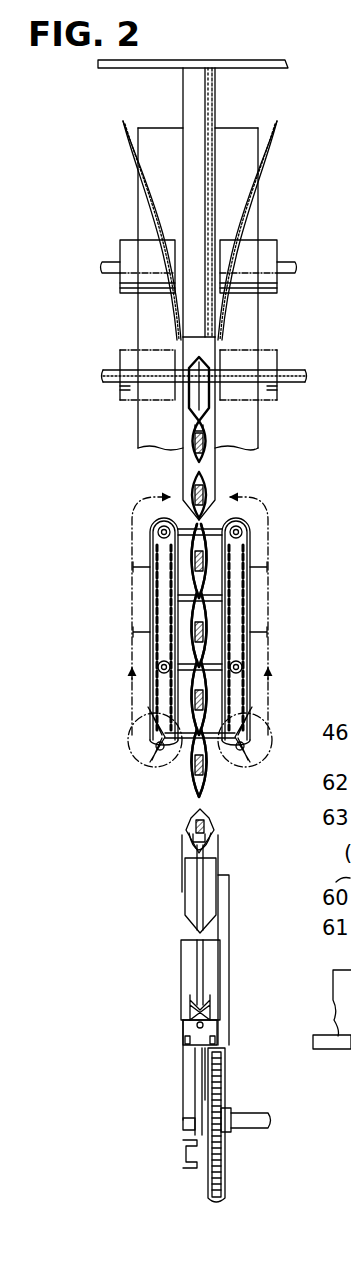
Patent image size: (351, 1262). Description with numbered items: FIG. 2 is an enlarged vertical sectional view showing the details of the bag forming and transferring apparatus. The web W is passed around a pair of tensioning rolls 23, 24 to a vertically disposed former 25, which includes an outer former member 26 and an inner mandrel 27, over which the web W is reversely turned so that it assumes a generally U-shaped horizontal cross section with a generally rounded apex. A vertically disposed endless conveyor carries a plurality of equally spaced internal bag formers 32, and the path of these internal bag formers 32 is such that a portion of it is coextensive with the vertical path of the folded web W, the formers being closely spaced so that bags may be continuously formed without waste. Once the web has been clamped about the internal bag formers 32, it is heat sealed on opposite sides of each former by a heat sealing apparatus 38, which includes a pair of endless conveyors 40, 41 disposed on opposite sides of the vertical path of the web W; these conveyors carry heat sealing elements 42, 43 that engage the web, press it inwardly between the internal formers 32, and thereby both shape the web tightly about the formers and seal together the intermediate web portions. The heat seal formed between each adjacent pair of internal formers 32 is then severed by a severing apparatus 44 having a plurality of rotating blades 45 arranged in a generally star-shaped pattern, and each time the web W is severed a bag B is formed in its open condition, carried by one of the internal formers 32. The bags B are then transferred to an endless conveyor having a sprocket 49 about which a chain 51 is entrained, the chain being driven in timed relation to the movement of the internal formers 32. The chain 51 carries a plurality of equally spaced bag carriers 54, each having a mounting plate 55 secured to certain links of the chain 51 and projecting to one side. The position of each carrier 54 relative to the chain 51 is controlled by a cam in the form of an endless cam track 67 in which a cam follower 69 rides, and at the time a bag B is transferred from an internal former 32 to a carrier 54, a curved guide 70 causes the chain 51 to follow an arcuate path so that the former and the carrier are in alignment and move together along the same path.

The tensioning roll 23 is at (272, 352).
The tensioning roll 24 is at (268, 252).
The former 25 is at (268, 160).
The outer former member 26 is at (248, 206).
The inner mandrel 27 is at (205, 95).
The internal bag former 32 is at (208, 410).
The heat sealing apparatus 38 is at (270, 535).
The endless conveyor 40 is at (150, 598).
The endless conveyor 41 is at (250, 598).
The heat sealing element 42 is at (138, 560).
The heat sealing element 43 is at (255, 632).
The severing apparatus 44 is at (265, 705).
The rotating blade 45 is at (150, 757).
The sprocket 49 is at (222, 1187).
The chain 51 is at (225, 1060).
The bag carrier 54 is at (172, 1030).
The mounting plate 55 is at (193, 1053).
The cam track 67 is at (182, 1145).
The cam follower 69 is at (185, 1130).
The curved guide 70 is at (230, 980).
The web W is at (145, 315).
The bag B is at (210, 783).